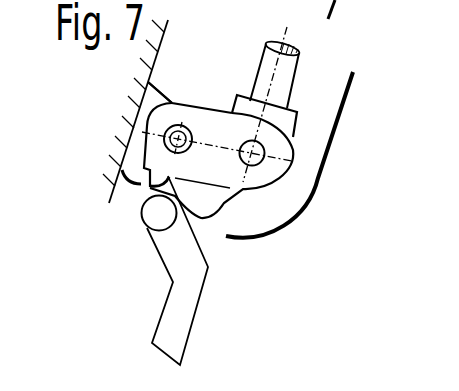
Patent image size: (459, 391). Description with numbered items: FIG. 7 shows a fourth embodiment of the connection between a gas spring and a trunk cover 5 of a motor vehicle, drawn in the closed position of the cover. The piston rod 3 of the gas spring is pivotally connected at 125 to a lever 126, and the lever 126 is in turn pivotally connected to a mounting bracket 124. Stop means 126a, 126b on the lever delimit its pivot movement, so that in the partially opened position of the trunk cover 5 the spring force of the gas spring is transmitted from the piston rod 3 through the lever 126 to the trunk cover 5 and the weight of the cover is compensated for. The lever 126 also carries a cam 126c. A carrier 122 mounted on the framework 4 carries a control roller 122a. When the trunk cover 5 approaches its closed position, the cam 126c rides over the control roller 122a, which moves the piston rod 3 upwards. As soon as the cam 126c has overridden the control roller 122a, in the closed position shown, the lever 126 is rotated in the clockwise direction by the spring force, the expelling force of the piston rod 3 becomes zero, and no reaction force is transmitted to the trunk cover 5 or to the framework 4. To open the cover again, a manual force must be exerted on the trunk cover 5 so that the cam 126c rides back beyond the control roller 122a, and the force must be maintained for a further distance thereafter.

The piston rod 3 is at (287, 66).
The framework 4 is at (197, 323).
The trunk cover 5 is at (163, 33).
The carrier 122 is at (168, 262).
The control roller 122a is at (152, 213).
The mounting bracket 124 is at (145, 116).
The pivot connection 125 is at (264, 150).
The lever 126 is at (215, 108).
The stop means 126a is at (146, 187).
The stop means 126b is at (124, 172).
The cam 126c is at (208, 205).